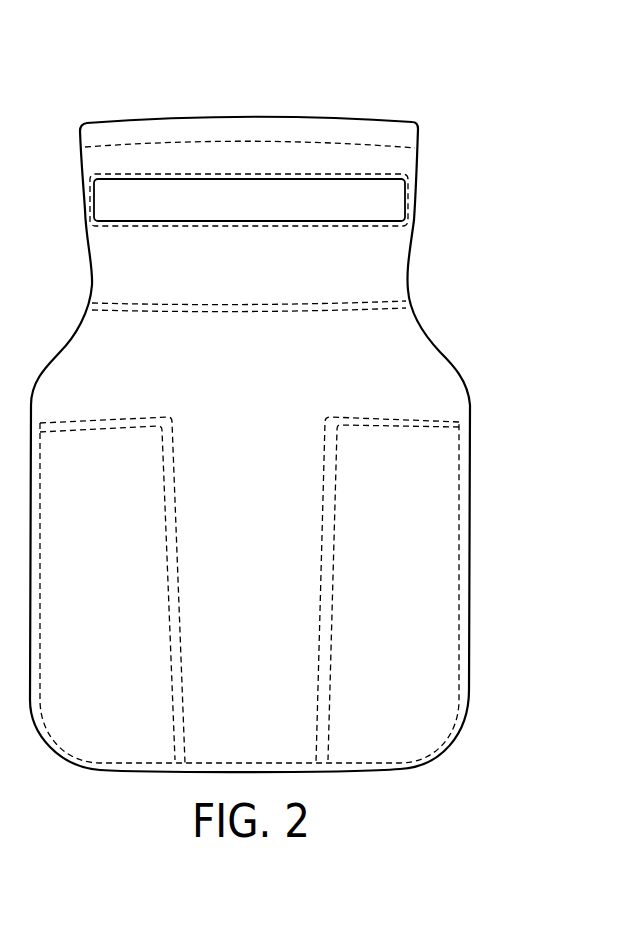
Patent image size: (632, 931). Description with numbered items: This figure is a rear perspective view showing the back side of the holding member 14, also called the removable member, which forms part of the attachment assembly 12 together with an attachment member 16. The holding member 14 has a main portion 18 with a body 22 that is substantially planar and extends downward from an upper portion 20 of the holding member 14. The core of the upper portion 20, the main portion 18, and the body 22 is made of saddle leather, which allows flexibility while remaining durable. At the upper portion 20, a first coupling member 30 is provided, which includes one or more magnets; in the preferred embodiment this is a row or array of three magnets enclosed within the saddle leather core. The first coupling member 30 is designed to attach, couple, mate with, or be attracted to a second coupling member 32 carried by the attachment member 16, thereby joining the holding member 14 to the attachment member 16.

The attachment assembly 12 is at (515, 116).
The holding member 14 is at (514, 241).
The attachment member 16 is at (3, 732).
The main portion 18 is at (492, 608).
The upper portion 20 is at (430, 214).
The body 22 is at (421, 376).
The first coupling member 30 is at (305, 200).
The second coupling member 32 is at (0, 155).